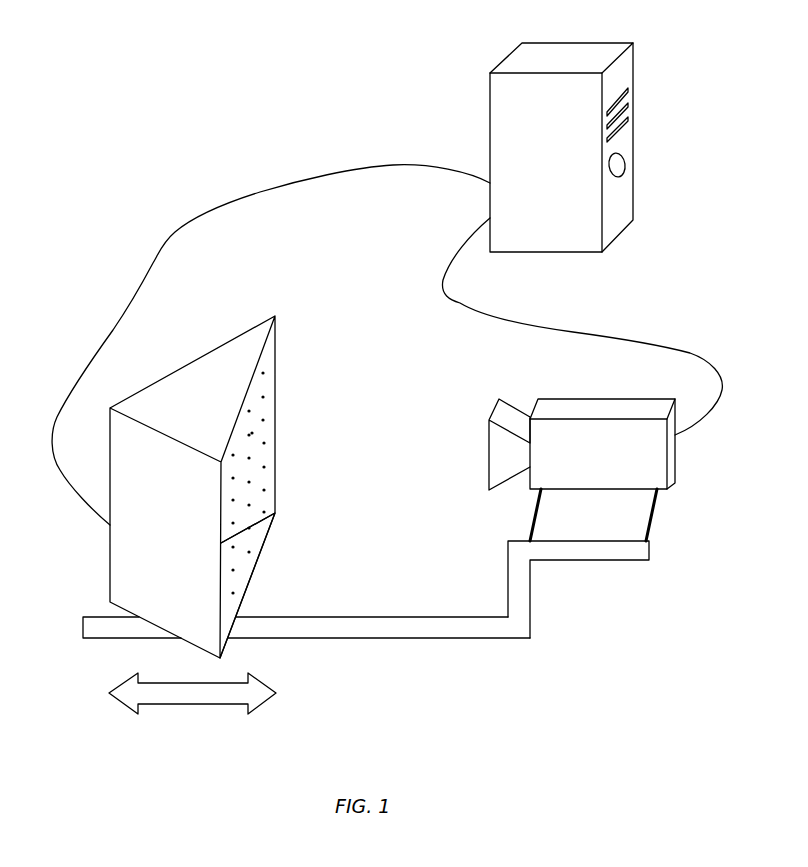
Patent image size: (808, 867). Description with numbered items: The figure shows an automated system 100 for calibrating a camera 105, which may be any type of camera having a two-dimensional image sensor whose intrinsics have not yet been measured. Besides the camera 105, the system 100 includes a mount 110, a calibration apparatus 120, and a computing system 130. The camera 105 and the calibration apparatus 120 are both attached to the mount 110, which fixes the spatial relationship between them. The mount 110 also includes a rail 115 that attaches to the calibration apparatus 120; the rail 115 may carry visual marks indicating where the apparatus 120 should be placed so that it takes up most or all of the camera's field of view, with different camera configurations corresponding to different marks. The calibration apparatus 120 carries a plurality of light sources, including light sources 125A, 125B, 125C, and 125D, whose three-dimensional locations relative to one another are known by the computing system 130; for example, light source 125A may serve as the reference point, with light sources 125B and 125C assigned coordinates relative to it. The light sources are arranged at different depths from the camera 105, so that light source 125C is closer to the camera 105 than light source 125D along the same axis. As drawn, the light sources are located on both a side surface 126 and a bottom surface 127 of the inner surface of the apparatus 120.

The automated system 100 is at (214, 94).
The camera 105 is at (675, 470).
The mount 110 is at (539, 603).
The rail 115 is at (392, 640).
The calibration apparatus 120 is at (203, 355).
The light source 125A is at (263, 373).
The light source 125B is at (263, 397).
The light source 125C is at (263, 420).
The light source 125D is at (252, 433).
The side surface 126 is at (282, 485).
The bottom surface 127 is at (273, 547).
The computing system 130 is at (585, 33).